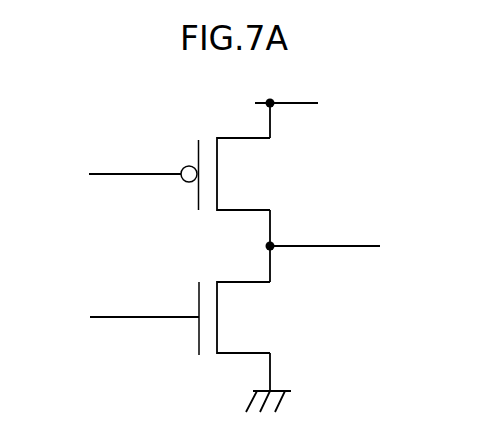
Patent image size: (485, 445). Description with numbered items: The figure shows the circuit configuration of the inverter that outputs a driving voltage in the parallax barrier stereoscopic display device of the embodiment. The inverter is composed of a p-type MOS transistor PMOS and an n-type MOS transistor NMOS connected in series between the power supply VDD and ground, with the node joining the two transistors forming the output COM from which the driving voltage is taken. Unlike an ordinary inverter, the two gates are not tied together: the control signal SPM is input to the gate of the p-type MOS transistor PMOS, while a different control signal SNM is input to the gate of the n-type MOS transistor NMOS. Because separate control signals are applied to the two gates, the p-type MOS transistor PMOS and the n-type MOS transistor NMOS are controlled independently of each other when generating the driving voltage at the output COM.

The p-type MOS transistor PMOS is at (198, 164).
The n-type MOS transistor NMOS is at (198, 336).
The power supply VDD is at (289, 108).
The driving voltage output COM is at (353, 246).
The control signal SPM is at (107, 173).
The control signal SNM is at (116, 316).